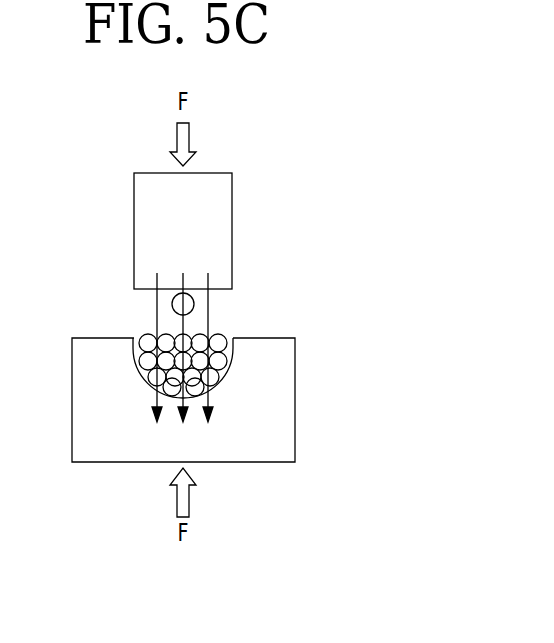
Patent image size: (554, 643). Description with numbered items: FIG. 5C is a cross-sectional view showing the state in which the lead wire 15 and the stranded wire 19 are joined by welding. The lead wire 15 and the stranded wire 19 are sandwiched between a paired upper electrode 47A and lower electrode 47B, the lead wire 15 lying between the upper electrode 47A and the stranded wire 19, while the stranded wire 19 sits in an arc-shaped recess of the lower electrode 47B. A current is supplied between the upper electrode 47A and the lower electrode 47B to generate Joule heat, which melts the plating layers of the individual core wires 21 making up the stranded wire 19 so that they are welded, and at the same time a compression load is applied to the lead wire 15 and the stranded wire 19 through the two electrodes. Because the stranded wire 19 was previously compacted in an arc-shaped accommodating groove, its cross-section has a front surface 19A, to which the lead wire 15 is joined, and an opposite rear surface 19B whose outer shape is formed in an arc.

The upper electrode 47A is at (232, 220).
The lower electrode 47B is at (72, 404).
The lead wire 15 is at (194, 304).
The stranded wire 19 is at (192, 390).
The front surface 19A is at (175, 334).
The rear surface 19B is at (194, 398).
The core wire 21 is at (138, 336).